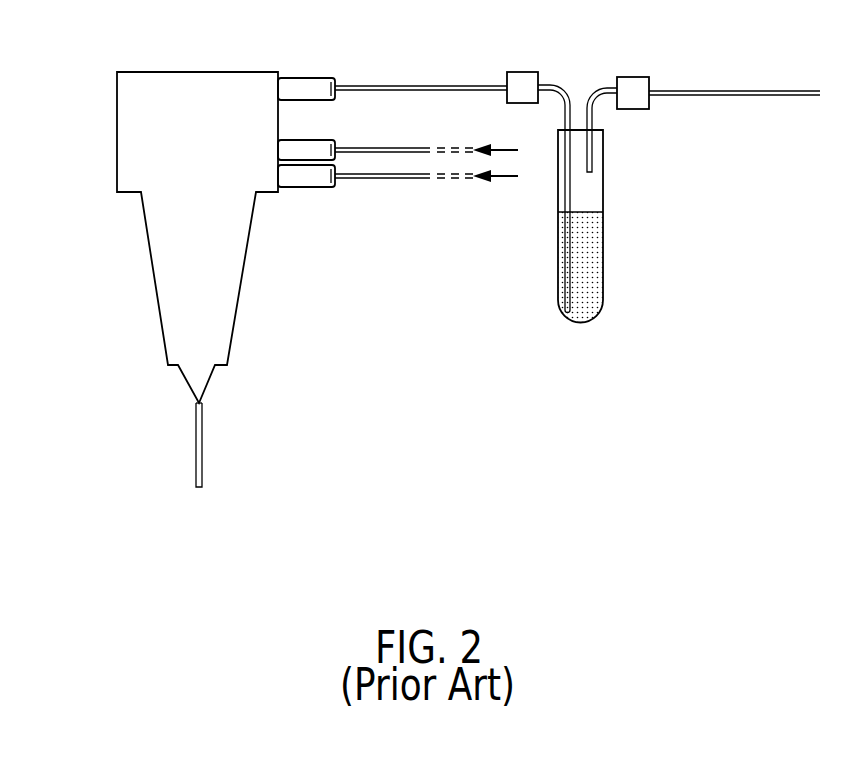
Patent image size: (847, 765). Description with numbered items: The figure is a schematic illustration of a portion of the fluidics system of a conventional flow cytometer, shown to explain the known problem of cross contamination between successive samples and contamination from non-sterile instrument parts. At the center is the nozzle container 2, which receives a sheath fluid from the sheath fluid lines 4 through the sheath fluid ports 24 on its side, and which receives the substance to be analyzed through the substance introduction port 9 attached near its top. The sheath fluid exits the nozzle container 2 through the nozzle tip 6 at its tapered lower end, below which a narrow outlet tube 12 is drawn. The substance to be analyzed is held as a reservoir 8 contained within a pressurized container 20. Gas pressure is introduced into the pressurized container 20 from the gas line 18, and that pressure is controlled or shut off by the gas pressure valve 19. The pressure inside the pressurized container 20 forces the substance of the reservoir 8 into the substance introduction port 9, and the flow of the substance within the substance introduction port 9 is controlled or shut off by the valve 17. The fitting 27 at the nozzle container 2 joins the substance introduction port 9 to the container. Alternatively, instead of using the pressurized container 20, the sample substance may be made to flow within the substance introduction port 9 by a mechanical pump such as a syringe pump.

The nozzle container 2 is at (80, 128).
The sheath fluid lines 4 is at (403, 148).
The nozzle tip 6 is at (200, 404).
The reservoir 8 is at (582, 280).
The substance introduction port 9 is at (417, 86).
The discharge tube 12 is at (202, 428).
The valve 17 is at (527, 72).
The gas line 18 is at (735, 91).
The gas pressure valve 19 is at (633, 77).
The pressurized container 20 is at (604, 192).
The sheath fluid ports 24 is at (325, 140).
The outlet connector 27 is at (302, 76).